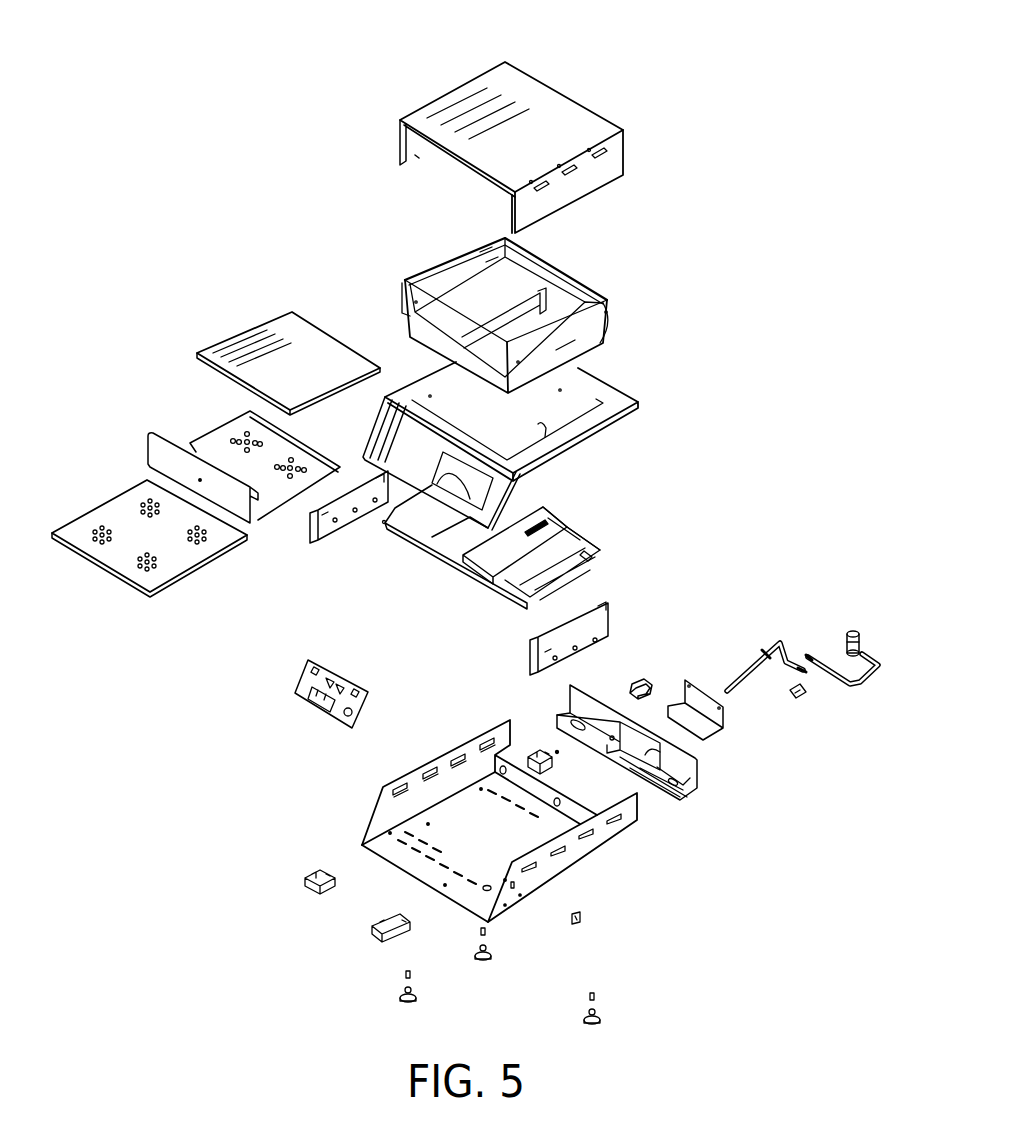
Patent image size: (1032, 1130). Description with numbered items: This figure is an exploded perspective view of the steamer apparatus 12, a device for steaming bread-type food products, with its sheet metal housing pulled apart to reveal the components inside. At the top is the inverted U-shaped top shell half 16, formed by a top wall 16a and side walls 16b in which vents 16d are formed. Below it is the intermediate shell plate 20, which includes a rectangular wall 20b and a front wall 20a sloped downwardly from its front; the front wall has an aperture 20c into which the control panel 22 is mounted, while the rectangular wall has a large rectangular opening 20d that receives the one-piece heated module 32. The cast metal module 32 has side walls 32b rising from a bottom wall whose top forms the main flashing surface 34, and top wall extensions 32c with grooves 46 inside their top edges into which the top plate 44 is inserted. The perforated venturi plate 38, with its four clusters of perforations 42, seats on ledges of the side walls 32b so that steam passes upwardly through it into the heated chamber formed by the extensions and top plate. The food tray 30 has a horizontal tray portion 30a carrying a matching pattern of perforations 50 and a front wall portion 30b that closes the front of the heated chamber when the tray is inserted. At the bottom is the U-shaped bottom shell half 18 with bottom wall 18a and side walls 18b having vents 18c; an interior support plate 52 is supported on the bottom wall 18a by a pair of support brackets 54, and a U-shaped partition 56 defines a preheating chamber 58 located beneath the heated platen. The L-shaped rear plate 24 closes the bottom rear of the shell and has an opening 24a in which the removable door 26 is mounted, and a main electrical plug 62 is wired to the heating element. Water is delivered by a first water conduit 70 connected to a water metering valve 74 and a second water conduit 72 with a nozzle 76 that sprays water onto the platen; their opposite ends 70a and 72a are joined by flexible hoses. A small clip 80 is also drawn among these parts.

The steamer apparatus 12 is at (305, 183).
The top shell half 16 is at (524, 120).
The top wall 16a is at (490, 78).
The side walls 16b is at (412, 142).
The vents 16d is at (600, 143).
The one-piece heated module 32 is at (534, 292).
The side walls 32b is at (404, 310).
The top wall extensions 32c is at (498, 260).
The main flashing surface 34 is at (500, 300).
The grooves 46 is at (449, 268).
The intermediate shell plate 20 is at (529, 485).
The front wall 20a is at (402, 437).
The rectangular wall 20b is at (600, 430).
The aperture 20c is at (393, 530).
The rectangular opening 20d is at (548, 428).
The top plate 44 is at (255, 338).
The food tray 30 is at (204, 439).
The horizontal tray portion 30a is at (215, 445).
The front wall portion 30b is at (155, 449).
The perforations 50 is at (283, 462).
The perforated venturi plate 38 is at (149, 548).
The perforations 42 is at (195, 545).
The support brackets 54 is at (320, 512).
The preheating chamber 58 is at (530, 525).
The U-shaped partition 56 is at (560, 530).
The interior support plate 52 is at (592, 565).
The control panel 22 is at (300, 703).
The rear plate 24 is at (660, 754).
The opening 24a is at (672, 792).
The removable door 26 is at (710, 722).
The main electrical plug 62 is at (648, 682).
The second water conduit 72 is at (745, 635).
The end 72a is at (802, 668).
The nozzle 76 is at (766, 650).
The clip 80 is at (765, 685).
The first water conduit 70 is at (846, 668).
The end 70a is at (810, 655).
The water metering valve 74 is at (855, 632).
The bottom shell half 18 is at (522, 804).
The bottom wall 18a is at (465, 840).
The side walls 18b is at (473, 763).
The vents 18c is at (428, 774).